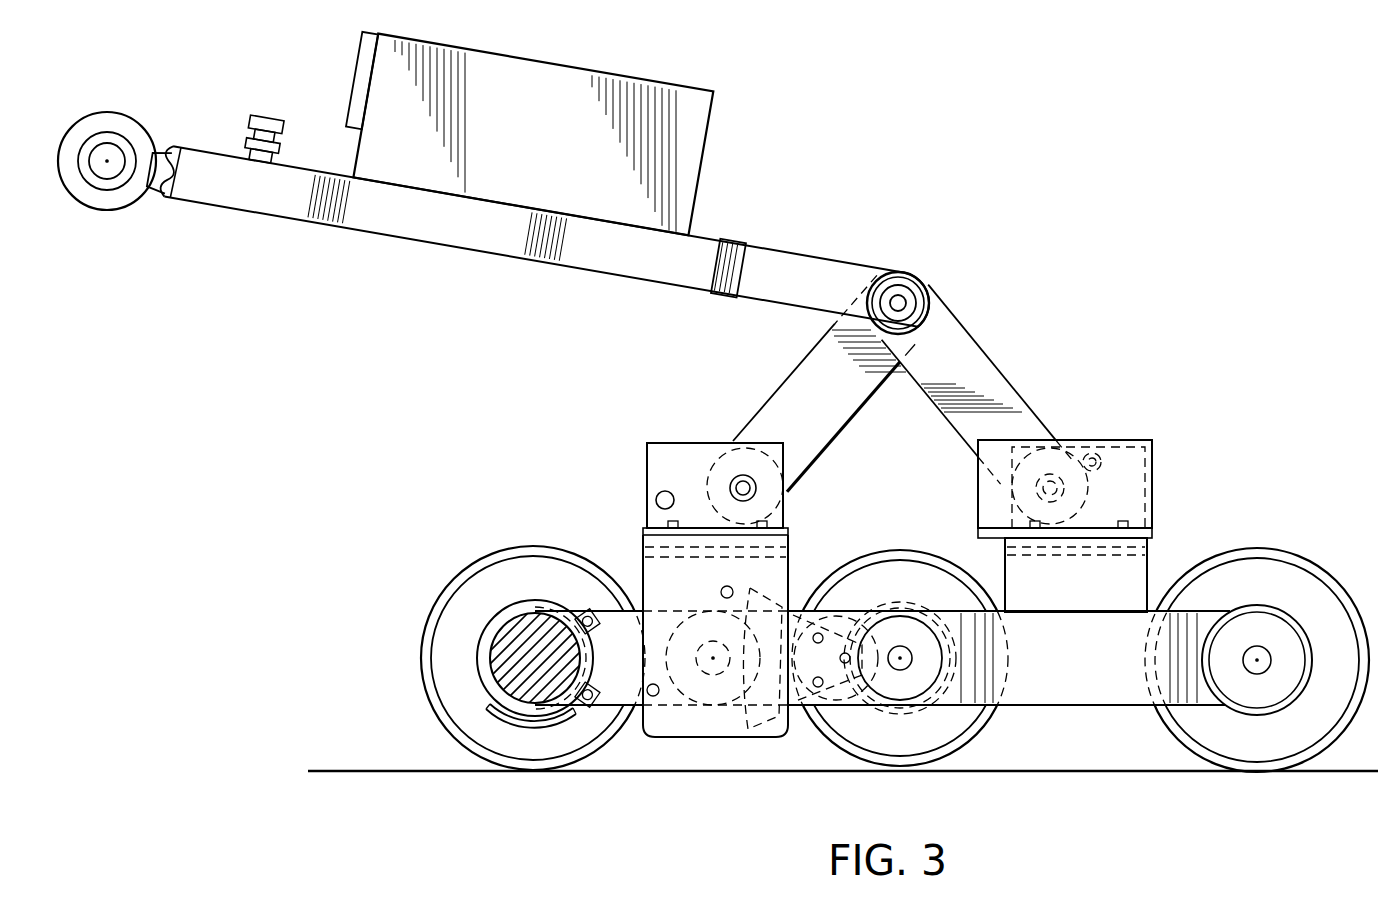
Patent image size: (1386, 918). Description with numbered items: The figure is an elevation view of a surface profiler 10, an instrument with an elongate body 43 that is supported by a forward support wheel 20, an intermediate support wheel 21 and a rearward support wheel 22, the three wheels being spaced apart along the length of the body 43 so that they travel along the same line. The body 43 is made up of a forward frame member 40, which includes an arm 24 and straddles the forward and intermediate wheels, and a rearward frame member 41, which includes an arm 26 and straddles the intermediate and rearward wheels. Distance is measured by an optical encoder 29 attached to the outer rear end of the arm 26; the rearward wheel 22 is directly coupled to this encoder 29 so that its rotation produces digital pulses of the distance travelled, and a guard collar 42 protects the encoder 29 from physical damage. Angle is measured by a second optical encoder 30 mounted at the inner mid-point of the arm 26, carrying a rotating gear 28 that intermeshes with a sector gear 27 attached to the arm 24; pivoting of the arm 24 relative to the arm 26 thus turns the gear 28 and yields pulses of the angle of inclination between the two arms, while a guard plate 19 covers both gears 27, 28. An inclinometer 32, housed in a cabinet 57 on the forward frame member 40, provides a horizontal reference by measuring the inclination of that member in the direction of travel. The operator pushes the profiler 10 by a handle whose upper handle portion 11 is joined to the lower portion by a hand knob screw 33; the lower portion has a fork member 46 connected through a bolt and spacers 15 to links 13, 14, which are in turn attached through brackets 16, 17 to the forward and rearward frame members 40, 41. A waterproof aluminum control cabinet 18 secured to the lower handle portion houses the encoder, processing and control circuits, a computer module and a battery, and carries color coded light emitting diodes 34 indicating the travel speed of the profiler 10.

The surface profiler 10 is at (718, 425).
The upper handle portion 11 is at (189, 147).
The link 13 is at (978, 365).
The link 14 is at (772, 412).
The bolt and spacers 15 is at (900, 297).
The bracket 16 is at (1102, 457).
The bracket 17 is at (662, 442).
The control cabinet 18 is at (713, 125).
The guard plate 19 is at (684, 657).
The forward support wheel 20 is at (1300, 571).
The intermediate support wheel 21 is at (878, 559).
The rearward support wheel 22 is at (526, 666).
The arm 24 is at (1082, 707).
The arm 26 is at (608, 745).
The sector gear 27 is at (777, 737).
The rotating gear 28 is at (722, 678).
The optical encoder 29 is at (488, 656).
The optical encoder 30 is at (698, 635).
The inclinometer 32 is at (1155, 462).
The hand knob screw 33 is at (266, 117).
The light emitting diodes 34 is at (362, 73).
The forward frame member 40 is at (1102, 445).
The rearward frame member 41 is at (707, 439).
The guard collar 42 is at (523, 725).
The elongate body 43 is at (507, 594).
The fork member 46 is at (820, 279).
The cabinet 57 is at (1155, 494).